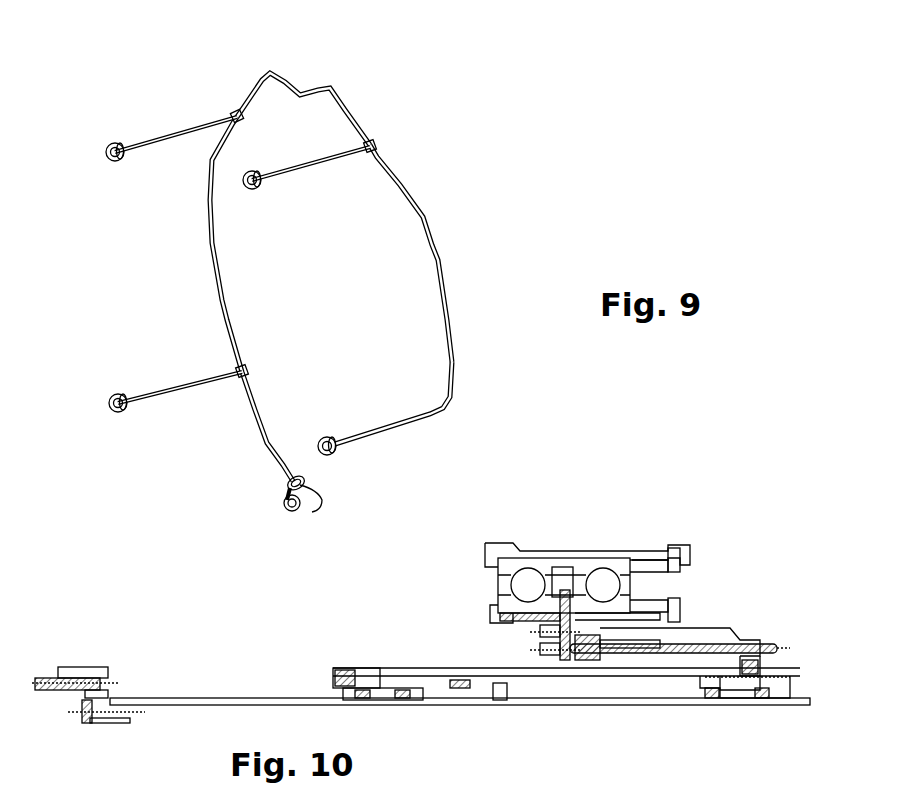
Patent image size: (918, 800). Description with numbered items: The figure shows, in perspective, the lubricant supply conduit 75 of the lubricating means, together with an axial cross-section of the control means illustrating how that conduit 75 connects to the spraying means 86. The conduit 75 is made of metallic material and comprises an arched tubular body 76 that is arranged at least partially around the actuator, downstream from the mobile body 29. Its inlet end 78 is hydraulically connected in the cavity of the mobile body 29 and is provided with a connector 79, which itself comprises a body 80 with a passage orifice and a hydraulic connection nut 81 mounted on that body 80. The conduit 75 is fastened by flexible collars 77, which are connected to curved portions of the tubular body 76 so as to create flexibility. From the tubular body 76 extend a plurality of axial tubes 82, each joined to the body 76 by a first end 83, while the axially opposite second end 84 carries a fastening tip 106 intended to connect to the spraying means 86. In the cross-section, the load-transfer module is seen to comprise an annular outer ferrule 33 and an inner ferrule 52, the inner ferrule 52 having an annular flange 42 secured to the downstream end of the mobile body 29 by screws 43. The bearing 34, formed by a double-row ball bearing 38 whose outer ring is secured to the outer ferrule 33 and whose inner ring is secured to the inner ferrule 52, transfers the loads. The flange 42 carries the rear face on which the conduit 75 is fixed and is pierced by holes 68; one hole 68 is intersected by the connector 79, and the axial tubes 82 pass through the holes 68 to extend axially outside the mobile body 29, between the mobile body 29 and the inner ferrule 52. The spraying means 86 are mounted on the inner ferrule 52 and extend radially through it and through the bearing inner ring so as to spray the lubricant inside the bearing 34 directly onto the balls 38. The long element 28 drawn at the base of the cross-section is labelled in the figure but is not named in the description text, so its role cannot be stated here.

In FIG. 9, the lubricant supply conduit 75 is at (284, 281).
In FIG. 9, the tubular body 76 is at (433, 278).
In FIG. 9, the flexible collars 77 is at (288, 80).
In FIG. 9, the inlet end 78 is at (293, 467).
In FIG. 9, the connector 79 is at (270, 497).
In FIG. 9, the body 80 is at (320, 507).
In FIG. 9, the hydraulic connection nut 81 is at (302, 513).
In FIG. 9, the axial tubes 82 is at (152, 135).
In FIG. 10, the axial tubes 82 is at (660, 657).
In FIG. 9, the first end 83 is at (357, 153).
In FIG. 9, the second end 84 is at (263, 173).
In FIG. 9, the fastening tip 106 is at (123, 162).
In FIG. 10, the fastening tip 106 is at (610, 660).
In FIG. 10, the base plate 28 is at (240, 703).
In FIG. 10, the mobile body 29 is at (412, 673).
In FIG. 10, the outer ferrule 33 is at (592, 553).
In FIG. 10, the bearing 34 is at (560, 568).
In FIG. 10, the double-row ball bearing 38 is at (502, 577).
In FIG. 10, the annular flange 42 is at (735, 627).
In FIG. 10, the screws 43 is at (750, 677).
In FIG. 10, the inner ferrule 52 is at (512, 620).
In FIG. 10, the holes 68 is at (753, 642).
In FIG. 10, the spraying means 86 is at (573, 676).